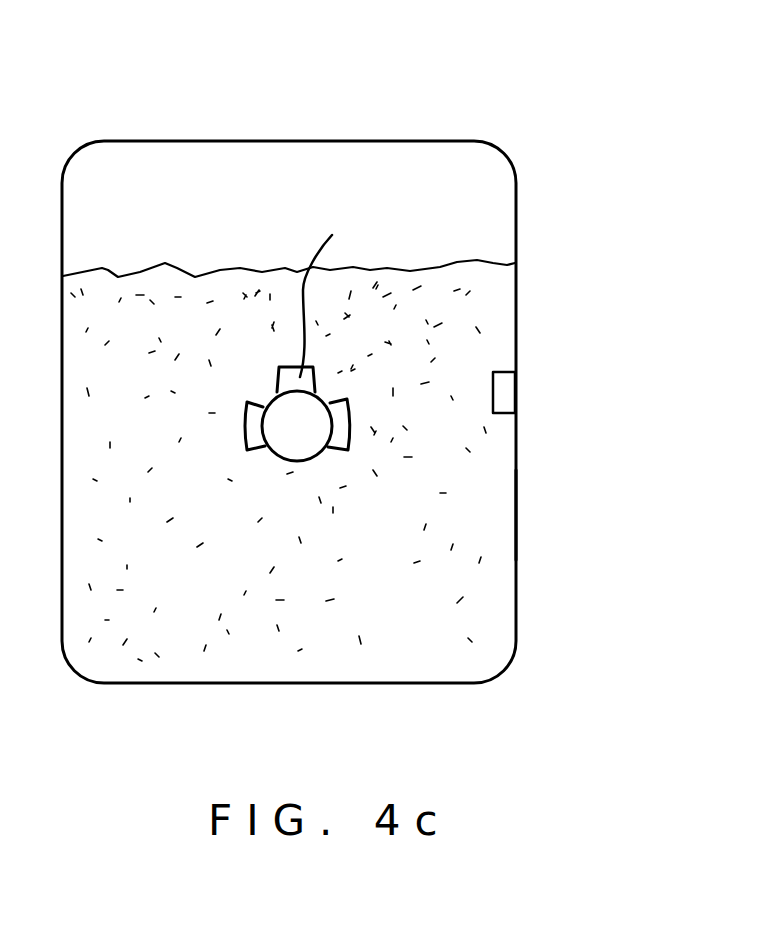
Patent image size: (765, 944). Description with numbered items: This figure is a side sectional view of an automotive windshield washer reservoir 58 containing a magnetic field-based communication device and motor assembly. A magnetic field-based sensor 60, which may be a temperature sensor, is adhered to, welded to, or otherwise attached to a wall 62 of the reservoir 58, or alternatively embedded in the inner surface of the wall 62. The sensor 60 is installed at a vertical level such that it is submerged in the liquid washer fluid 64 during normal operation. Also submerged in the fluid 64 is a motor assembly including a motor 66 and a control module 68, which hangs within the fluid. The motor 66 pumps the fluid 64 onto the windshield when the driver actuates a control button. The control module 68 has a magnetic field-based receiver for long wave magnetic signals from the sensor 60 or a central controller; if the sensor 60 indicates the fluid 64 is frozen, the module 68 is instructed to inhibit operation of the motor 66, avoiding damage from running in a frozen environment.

The windshield washer reservoir 58 is at (93, 142).
The magnetic field-based sensor 60 is at (505, 397).
The wall 62 is at (515, 510).
The washer fluid 64 is at (440, 633).
The motor 66 is at (315, 437).
The control module 68 is at (341, 289).